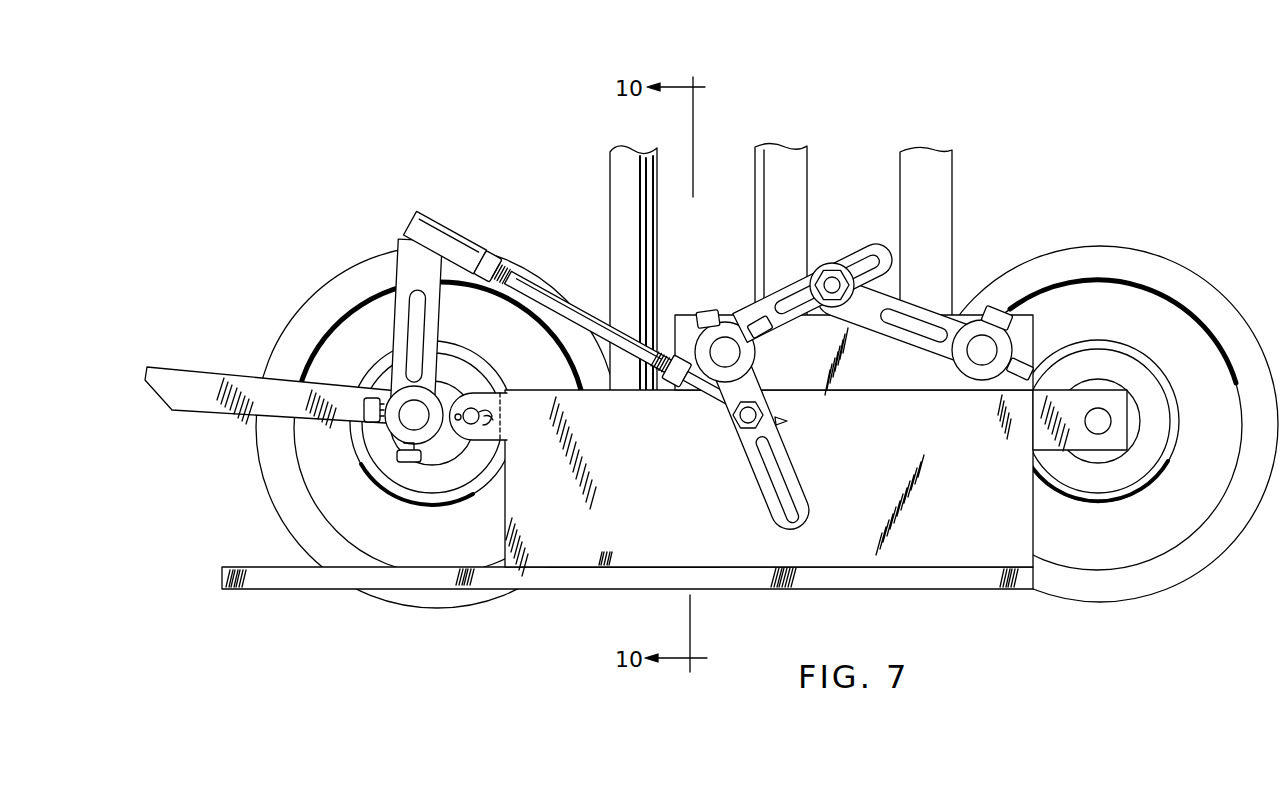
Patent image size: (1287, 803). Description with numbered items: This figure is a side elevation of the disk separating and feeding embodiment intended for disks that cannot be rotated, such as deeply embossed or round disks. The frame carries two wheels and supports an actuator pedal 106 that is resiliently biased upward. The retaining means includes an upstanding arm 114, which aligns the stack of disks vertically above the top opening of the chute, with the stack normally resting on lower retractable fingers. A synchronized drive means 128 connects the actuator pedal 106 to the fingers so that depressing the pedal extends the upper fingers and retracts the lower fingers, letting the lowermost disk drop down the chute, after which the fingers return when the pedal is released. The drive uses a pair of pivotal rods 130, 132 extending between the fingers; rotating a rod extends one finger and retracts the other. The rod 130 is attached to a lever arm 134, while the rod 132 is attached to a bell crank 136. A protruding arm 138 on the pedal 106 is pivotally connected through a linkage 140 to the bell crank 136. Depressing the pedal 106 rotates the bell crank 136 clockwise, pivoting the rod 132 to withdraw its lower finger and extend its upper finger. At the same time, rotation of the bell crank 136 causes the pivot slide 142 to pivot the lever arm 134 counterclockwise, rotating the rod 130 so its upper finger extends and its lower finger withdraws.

The actuator pedal 106 is at (223, 390).
The upstanding arm 114 is at (953, 181).
The synchronized drive means 128 is at (833, 262).
The pivotal rod 130 is at (985, 350).
The pivotal rod 132 is at (723, 347).
The lever arm 134 is at (907, 300).
The bell crank 136 is at (742, 312).
The protruding arm 138 is at (403, 330).
The linkage 140 is at (528, 295).
The pivot slide 142 is at (830, 277).